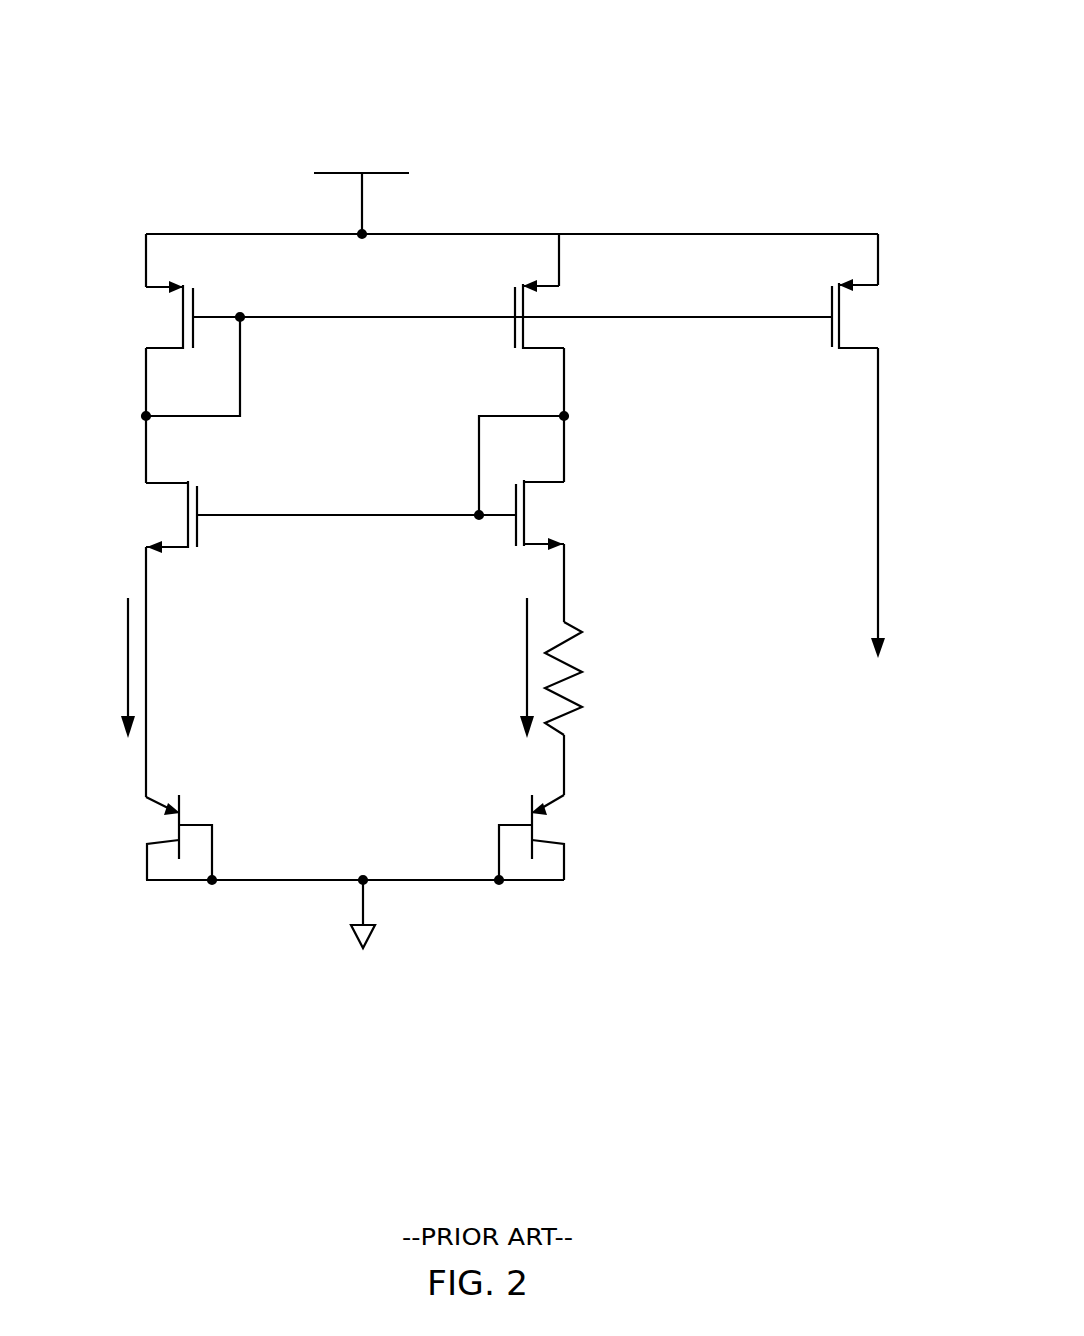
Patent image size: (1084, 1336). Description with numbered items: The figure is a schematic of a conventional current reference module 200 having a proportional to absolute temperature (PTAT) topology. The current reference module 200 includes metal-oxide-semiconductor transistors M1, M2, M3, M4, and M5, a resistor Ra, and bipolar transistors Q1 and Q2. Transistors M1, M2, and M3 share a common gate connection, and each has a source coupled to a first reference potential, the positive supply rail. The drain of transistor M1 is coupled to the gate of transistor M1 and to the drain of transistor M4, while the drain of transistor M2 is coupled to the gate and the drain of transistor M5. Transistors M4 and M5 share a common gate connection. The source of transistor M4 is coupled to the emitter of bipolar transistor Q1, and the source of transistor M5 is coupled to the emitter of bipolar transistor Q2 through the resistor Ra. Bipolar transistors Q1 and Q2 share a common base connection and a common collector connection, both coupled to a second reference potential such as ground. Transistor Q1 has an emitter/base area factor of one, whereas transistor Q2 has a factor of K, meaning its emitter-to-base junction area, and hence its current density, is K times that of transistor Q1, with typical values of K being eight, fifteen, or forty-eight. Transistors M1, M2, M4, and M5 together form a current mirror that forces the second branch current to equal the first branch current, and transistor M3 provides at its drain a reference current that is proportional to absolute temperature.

The current reference module 200 is at (836, 49).
The MOS transistor M1 is at (160, 315).
The MOS transistor M2 is at (554, 314).
The MOS transistor M3 is at (870, 314).
The MOS transistor M4 is at (162, 517).
The MOS transistor M5 is at (546, 515).
The resistor Ra is at (587, 678).
The bipolar transistor Q1 is at (189, 833).
The bipolar transistor Q2 is at (520, 833).